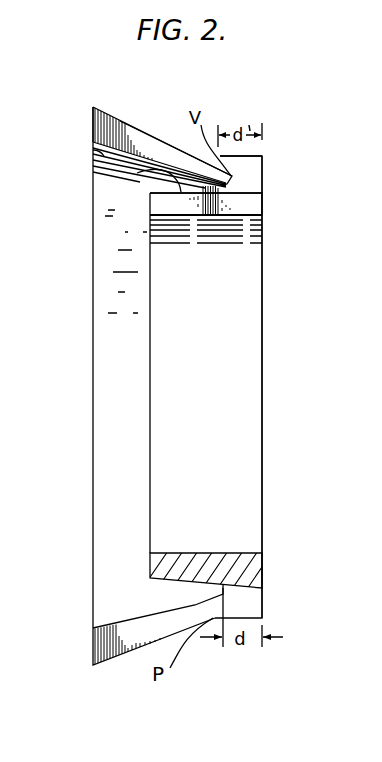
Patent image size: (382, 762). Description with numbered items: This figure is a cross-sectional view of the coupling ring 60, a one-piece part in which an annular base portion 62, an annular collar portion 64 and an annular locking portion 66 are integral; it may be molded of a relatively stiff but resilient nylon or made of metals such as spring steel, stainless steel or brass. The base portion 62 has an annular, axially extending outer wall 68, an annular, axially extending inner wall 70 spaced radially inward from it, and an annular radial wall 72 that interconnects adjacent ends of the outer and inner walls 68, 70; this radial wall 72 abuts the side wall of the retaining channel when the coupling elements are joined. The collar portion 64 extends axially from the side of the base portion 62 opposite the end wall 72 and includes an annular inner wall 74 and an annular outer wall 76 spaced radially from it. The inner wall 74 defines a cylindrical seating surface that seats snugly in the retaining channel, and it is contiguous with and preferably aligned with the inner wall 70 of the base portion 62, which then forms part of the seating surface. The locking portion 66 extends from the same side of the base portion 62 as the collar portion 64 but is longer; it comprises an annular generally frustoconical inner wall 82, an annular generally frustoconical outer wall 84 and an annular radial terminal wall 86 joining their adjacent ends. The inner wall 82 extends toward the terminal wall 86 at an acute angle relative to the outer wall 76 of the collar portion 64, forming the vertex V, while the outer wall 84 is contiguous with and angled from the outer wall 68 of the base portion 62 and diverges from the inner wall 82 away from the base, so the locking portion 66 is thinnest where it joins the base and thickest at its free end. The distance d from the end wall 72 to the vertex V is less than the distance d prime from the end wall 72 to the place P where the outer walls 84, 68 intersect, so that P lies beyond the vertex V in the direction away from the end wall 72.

The coupling ring 60 is at (248, 102).
The base portion 62 is at (266, 169).
The collar portion 64 is at (147, 208).
The locking portion 66 is at (120, 110).
The outer wall 68 is at (256, 156).
The inner wall 70 is at (247, 216).
The radial wall 72 is at (263, 197).
The inner wall 74 is at (193, 217).
The outer wall 76 is at (137, 173).
The inner wall 82 is at (94, 150).
The outer wall 84 is at (180, 140).
The terminal wall 86 is at (92, 122).